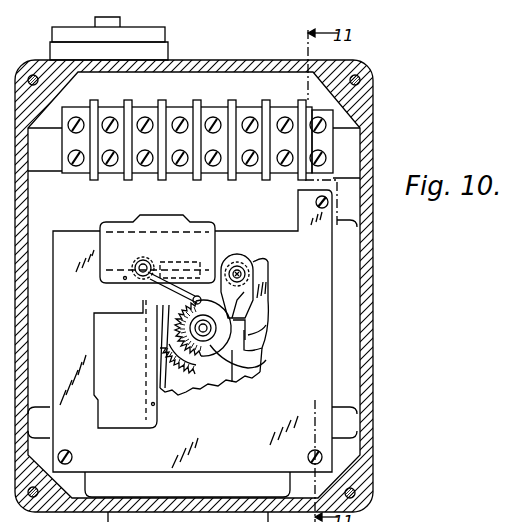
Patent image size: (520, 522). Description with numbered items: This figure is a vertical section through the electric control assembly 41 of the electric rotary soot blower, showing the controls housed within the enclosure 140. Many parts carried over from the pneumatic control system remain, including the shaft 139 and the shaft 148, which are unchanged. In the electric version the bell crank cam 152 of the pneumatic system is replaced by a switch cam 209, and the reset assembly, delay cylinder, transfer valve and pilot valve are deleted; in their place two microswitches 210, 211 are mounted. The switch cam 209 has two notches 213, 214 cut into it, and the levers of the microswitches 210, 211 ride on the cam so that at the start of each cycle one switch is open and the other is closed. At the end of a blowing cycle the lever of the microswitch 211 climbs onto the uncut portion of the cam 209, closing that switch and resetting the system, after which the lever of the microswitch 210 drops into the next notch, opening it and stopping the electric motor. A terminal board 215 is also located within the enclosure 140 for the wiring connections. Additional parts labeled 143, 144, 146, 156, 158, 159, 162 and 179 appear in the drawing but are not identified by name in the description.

The electric control assembly 41 is at (102, 288).
The shaft 139 is at (287, 298).
The enclosure 140 is at (374, 330).
The switch 143 is at (158, 262).
The switch pivot 144 is at (128, 263).
The switch contact 146 is at (173, 260).
The shaft 148 is at (262, 306).
The bell crank cam 152 is at (211, 385).
The pivot pin 156 is at (242, 293).
The arm 158 is at (252, 324).
The lever housing 159 is at (258, 290).
The bottom bracket 162 is at (188, 473).
The ratchet sector 179 is at (202, 377).
The switch cam 209 is at (225, 333).
The microswitch 210 is at (220, 253).
The microswitch 211 is at (123, 426).
The notch 213 is at (148, 296).
The notch 214 is at (240, 367).
The terminal board 215 is at (222, 180).